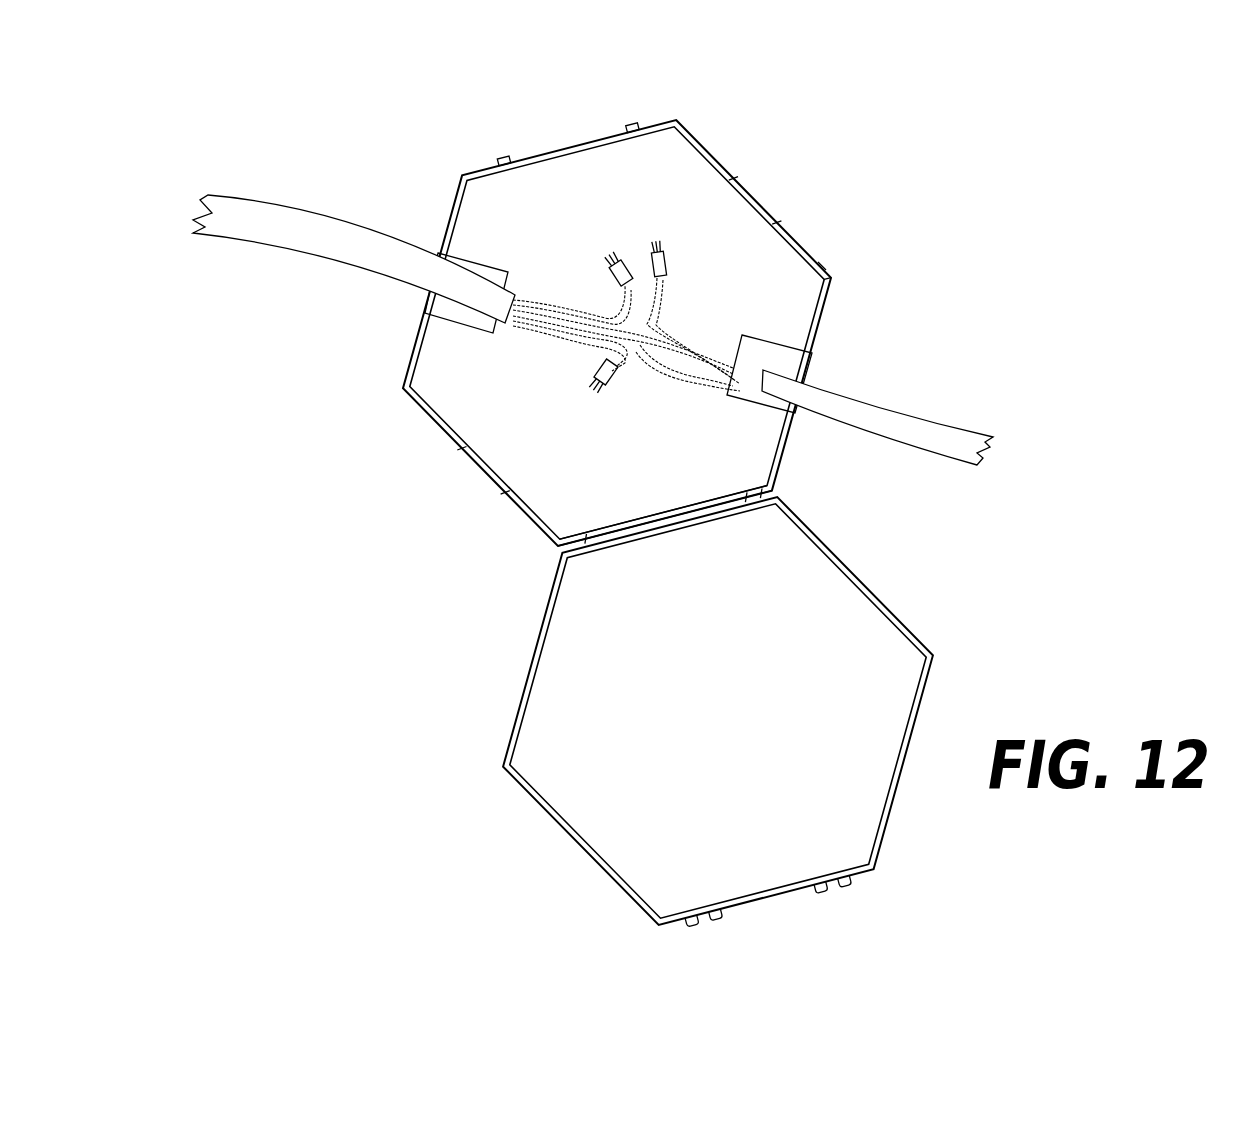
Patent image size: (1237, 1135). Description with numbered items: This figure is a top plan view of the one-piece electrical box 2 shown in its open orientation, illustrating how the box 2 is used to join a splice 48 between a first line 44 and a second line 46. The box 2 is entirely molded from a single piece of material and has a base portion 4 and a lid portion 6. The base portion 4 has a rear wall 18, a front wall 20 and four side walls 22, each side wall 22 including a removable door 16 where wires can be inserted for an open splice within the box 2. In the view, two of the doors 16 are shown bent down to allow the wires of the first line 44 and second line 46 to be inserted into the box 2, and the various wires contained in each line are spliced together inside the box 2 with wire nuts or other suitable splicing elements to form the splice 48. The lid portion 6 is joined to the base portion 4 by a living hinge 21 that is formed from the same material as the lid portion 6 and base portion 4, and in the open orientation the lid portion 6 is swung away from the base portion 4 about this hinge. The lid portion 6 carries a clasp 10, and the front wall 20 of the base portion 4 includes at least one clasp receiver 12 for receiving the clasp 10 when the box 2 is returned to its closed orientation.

The electrical box 2 is at (347, 125).
The base portion 4 is at (843, 250).
The lid portion 6 is at (910, 598).
The clasp 10 is at (631, 128).
The clasp receiver 12 is at (815, 890).
The removable door 16 is at (751, 200).
The rear wall 18 is at (666, 515).
The front wall 20 is at (478, 170).
The living hinge 21 is at (768, 492).
The side wall 22 is at (823, 323).
The first line 44 is at (915, 430).
The second line 46 is at (368, 256).
The splice 48 is at (634, 266).